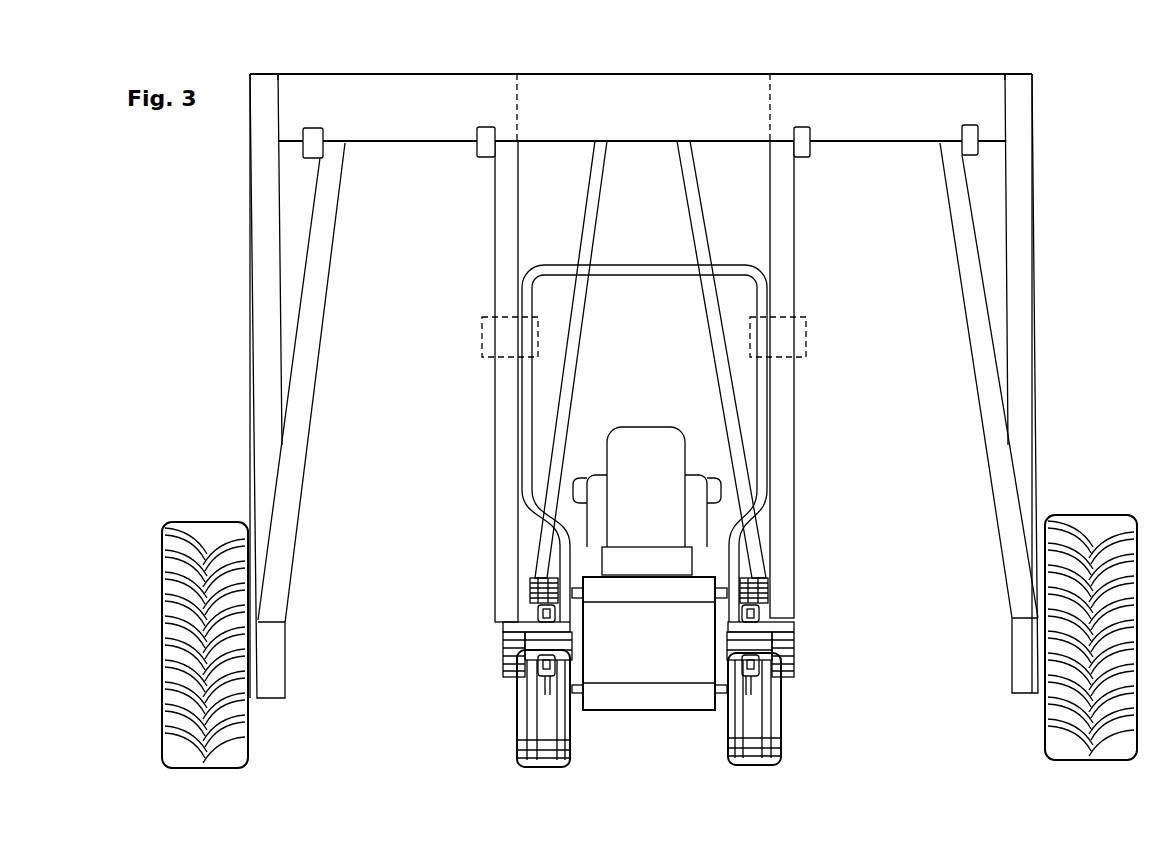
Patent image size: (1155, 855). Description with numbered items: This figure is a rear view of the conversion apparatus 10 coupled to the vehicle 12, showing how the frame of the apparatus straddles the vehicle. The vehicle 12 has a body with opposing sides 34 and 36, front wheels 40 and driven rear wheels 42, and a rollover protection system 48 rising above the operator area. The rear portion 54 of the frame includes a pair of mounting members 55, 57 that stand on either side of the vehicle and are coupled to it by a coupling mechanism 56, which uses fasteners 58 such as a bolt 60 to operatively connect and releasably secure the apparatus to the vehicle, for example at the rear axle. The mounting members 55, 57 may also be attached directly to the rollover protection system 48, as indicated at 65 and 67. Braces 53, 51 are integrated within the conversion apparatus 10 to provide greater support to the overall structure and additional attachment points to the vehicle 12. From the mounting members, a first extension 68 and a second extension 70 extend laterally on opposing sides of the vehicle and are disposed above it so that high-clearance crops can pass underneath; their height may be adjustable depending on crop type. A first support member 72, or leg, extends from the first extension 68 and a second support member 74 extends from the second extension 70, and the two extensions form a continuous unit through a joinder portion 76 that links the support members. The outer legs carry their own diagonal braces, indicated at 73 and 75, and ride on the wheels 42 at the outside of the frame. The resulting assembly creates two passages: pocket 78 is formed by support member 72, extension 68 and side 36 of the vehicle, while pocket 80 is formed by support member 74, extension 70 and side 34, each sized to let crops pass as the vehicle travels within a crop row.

The conversion apparatus 10 is at (966, 50).
The vehicle 12 is at (660, 653).
The side 34 is at (573, 487).
The side 36 is at (720, 487).
The front wheels 40 is at (570, 735).
The rear wheels 42 is at (248, 725).
The rollover protection system 48 is at (628, 265).
The brace 51 is at (700, 228).
The brace 53 is at (585, 228).
The rear portion 54 is at (645, 68).
The mounting member 55 is at (790, 232).
The coupling mechanism 56 is at (488, 613).
The mounting member 57 is at (495, 245).
The fasteners 58 is at (540, 668).
The bolt 60 is at (548, 692).
The attachment to rollover protection system 65 is at (483, 347).
The attachment to rollover protection system 67 is at (805, 347).
The first extension 68 is at (873, 77).
The second extension 70 is at (405, 78).
The first support member 72 is at (1035, 330).
The left outer diagonal brace 73 is at (323, 250).
The second support member 74 is at (253, 330).
The right outer diagonal brace 75 is at (962, 250).
The joinder portion 76 is at (702, 85).
The pocket 78 is at (888, 383).
The pocket 80 is at (407, 388).